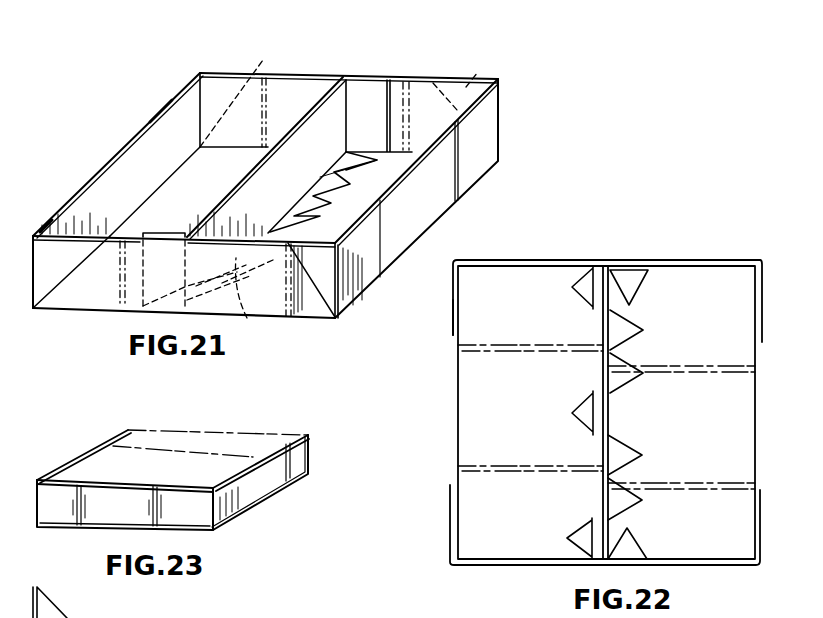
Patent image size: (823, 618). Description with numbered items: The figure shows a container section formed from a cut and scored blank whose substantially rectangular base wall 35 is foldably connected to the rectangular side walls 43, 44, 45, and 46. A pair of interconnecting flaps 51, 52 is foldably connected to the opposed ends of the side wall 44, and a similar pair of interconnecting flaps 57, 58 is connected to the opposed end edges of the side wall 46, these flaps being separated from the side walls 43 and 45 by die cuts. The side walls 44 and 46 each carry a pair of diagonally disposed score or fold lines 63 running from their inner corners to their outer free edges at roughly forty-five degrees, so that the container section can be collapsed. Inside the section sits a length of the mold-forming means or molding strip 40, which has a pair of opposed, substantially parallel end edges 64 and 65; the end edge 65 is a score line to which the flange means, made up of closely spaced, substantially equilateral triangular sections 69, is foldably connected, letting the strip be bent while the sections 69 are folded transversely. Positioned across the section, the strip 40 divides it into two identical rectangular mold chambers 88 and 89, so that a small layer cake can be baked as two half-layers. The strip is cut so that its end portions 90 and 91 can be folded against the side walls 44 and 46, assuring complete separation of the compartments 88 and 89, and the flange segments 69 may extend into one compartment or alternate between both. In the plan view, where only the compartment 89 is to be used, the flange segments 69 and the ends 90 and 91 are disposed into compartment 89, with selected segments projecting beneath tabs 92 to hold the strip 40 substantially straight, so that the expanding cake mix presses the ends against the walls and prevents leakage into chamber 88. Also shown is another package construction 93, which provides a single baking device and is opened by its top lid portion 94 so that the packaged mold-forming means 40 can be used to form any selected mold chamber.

In FIG. 21, the base portion or wall 35 is at (196, 197).
In FIG. 22, the base portion or wall 35 is at (478, 448).
In FIG. 21, the mold-forming means 40 is at (337, 88).
In FIG. 22, the mold-forming means 40 is at (603, 339).
In FIG. 21, the side wall 43 is at (123, 147).
In FIG. 22, the side wall 43 is at (456, 407).
In FIG. 21, the side wall 44 is at (306, 84).
In FIG. 22, the side wall 44 is at (575, 263).
In FIG. 21, the side wall 45 is at (430, 212).
In FIG. 22, the side wall 45 is at (762, 432).
In FIG. 21, the side wall 46 is at (107, 288).
In FIG. 22, the side wall 46 is at (502, 566).
In FIG. 21, the interconnecting flap 51 is at (173, 93).
In FIG. 22, the interconnecting flap 51 is at (453, 291).
In FIG. 21, the interconnecting flap 52 is at (478, 140).
In FIG. 22, the interconnecting flap 52 is at (762, 316).
In FIG. 21, the interconnecting flap 57 is at (55, 210).
In FIG. 22, the interconnecting flap 57 is at (451, 539).
In FIG. 21, the interconnecting flap 58 is at (363, 282).
In FIG. 22, the interconnecting flap 58 is at (759, 548).
In FIG. 21, the diagonally disposed score or fold lines 63 is at (37, 332).
In FIG. 21, the end edge 64 is at (300, 121).
In FIG. 21, the end edge 65 is at (245, 322).
In FIG. 21, the triangular legs or sections 69 is at (333, 194).
In FIG. 22, the triangular legs or sections 69 is at (644, 333).
In FIG. 21, the mold chamber 88 is at (213, 92).
In FIG. 22, the mold chamber 88 is at (484, 494).
In FIG. 21, the mold chamber 89 is at (416, 96).
In FIG. 22, the mold chamber 89 is at (698, 280).
In FIG. 21, the end portion 90 is at (368, 90).
In FIG. 22, the end portion 90 is at (636, 282).
In FIG. 21, the end portion 91 is at (170, 232).
In FIG. 22, the end portion 91 is at (633, 559).
In FIG. 22, the tabs 92 is at (588, 294).
In FIG. 23, the package construction 93 is at (96, 425).
In FIG. 23, the top lid portion 94 is at (208, 446).